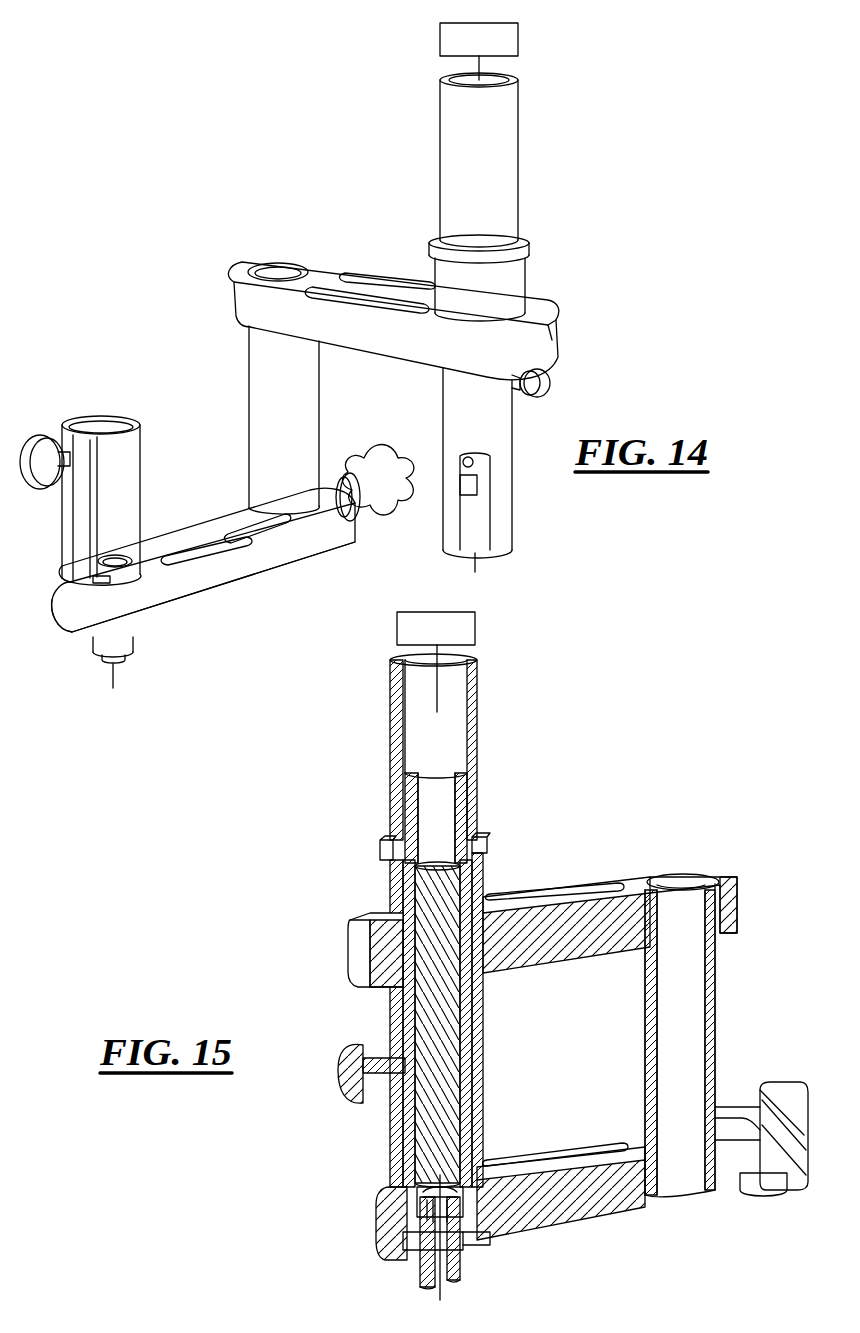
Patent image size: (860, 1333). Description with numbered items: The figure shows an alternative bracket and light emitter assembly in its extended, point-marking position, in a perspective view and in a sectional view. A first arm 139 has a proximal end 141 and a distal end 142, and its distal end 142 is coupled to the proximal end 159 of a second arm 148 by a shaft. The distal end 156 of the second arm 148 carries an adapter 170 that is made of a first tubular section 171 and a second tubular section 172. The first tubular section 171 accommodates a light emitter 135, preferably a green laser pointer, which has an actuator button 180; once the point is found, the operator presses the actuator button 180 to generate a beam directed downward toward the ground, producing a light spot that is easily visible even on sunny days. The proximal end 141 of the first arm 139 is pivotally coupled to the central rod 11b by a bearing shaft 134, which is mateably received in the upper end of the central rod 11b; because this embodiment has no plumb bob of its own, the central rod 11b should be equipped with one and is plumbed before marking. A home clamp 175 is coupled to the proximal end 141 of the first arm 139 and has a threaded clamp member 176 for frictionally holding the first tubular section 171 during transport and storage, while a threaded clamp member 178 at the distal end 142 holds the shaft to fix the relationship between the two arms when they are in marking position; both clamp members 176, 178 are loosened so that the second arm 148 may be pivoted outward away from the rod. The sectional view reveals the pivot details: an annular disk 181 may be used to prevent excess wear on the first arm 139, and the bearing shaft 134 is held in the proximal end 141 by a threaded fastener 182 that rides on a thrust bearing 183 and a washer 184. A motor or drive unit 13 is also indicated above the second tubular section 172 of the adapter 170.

In FIG. 14, the motor/drive unit 13 is at (505, 33).
In FIG. 15, the motor/drive unit 13 is at (455, 628).
In FIG. 14, the second tubular section 172 is at (520, 92).
In FIG. 15, the second tubular section 172 is at (390, 710).
In FIG. 14, the adapter 170 is at (522, 205).
In FIG. 15, the adapter 170 is at (385, 767).
In FIG. 14, the second arm 148 is at (360, 265).
In FIG. 14, the proximal end 159 is at (240, 262).
In FIG. 14, the distal end 156 is at (548, 340).
In FIG. 15, the distal end 156 is at (542, 1035).
In FIG. 14, the threaded clamp member 176 is at (36, 450).
In FIG. 14, the threaded clamp member 178 is at (380, 466).
In FIG. 15, the threaded clamp member 178 is at (371, 1073).
In FIG. 14, the home clamp 175 is at (62, 510).
In FIG. 14, the first tubular section 171 is at (512, 490).
In FIG. 15, the first tubular section 171 is at (390, 985).
In FIG. 14, the light emitter 135 is at (460, 523).
In FIG. 15, the light emitter 135 is at (435, 1095).
In FIG. 14, the distal end 142 is at (345, 548).
In FIG. 14, the actuator button 180 is at (470, 495).
In FIG. 14, the proximal end 141 is at (70, 597).
In FIG. 15, the proximal end 141 is at (391, 1223).
In FIG. 14, the first arm 139 is at (228, 600).
In FIG. 15, the first arm 139 is at (550, 1148).
In FIG. 14, the central rod 11b is at (118, 660).
In FIG. 15, the central rod 11b is at (430, 1292).
In FIG. 15, the washer 184 is at (512, 1200).
In FIG. 15, the thrust bearing 183 is at (425, 1188).
In FIG. 15, the threaded fastener 182 is at (420, 1215).
In FIG. 15, the bearing shaft 134 is at (420, 1272).
In FIG. 15, the annular disk 181 is at (470, 1243).